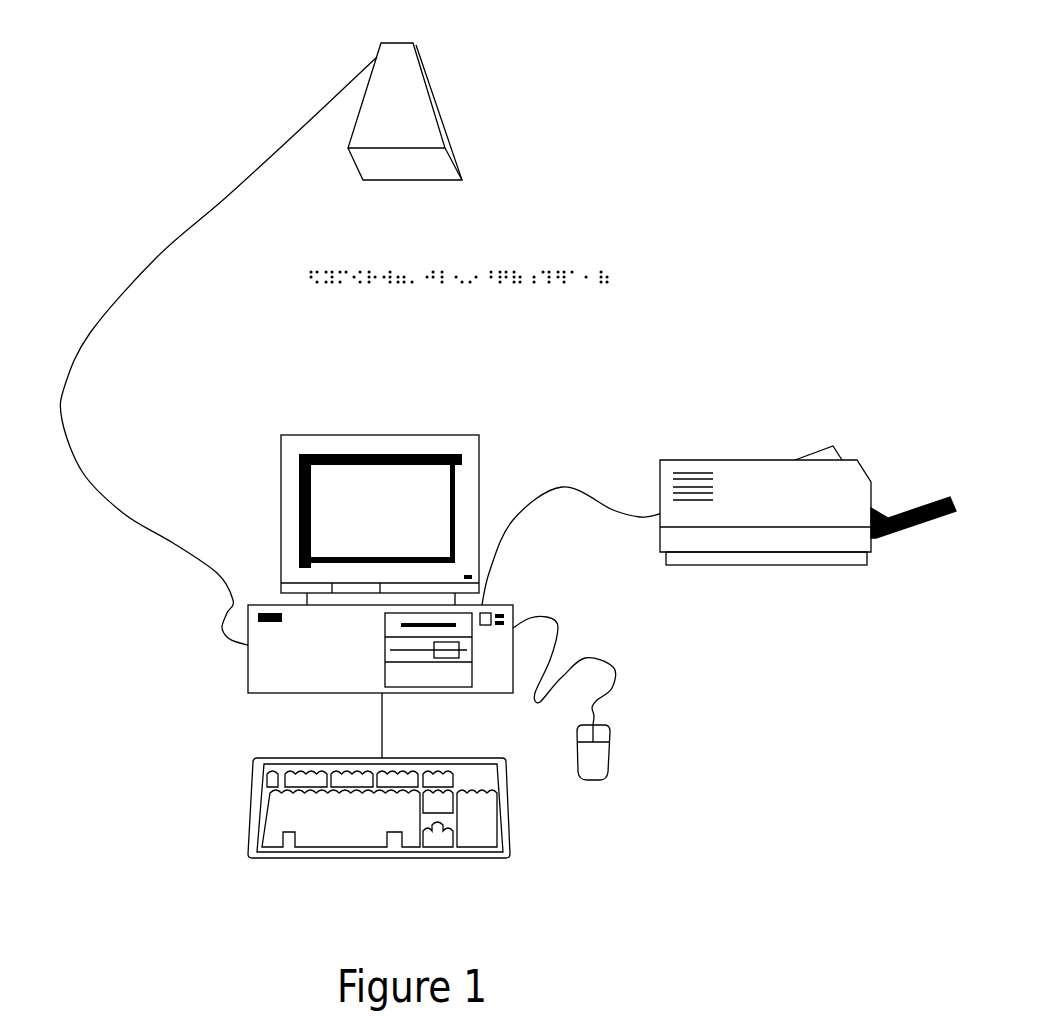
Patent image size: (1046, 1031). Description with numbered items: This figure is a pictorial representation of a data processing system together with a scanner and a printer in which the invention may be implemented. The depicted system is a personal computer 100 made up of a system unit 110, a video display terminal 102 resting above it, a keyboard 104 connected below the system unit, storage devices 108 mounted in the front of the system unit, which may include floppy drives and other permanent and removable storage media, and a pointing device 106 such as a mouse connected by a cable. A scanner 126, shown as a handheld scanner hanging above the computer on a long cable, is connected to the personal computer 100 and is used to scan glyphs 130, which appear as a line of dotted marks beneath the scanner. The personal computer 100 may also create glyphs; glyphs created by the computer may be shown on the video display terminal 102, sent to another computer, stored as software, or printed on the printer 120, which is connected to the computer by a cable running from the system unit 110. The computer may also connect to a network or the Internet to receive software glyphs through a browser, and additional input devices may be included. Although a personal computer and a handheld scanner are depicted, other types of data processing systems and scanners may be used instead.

The personal computer 100 is at (218, 541).
The video display terminal 102 is at (382, 435).
The keyboard 104 is at (488, 862).
The pointing device 106 is at (610, 742).
The storage devices 108 is at (385, 648).
The system unit 110 is at (488, 697).
The printer 120 is at (752, 592).
The scanner 126 is at (413, 95).
The glyphs 130 is at (593, 257).